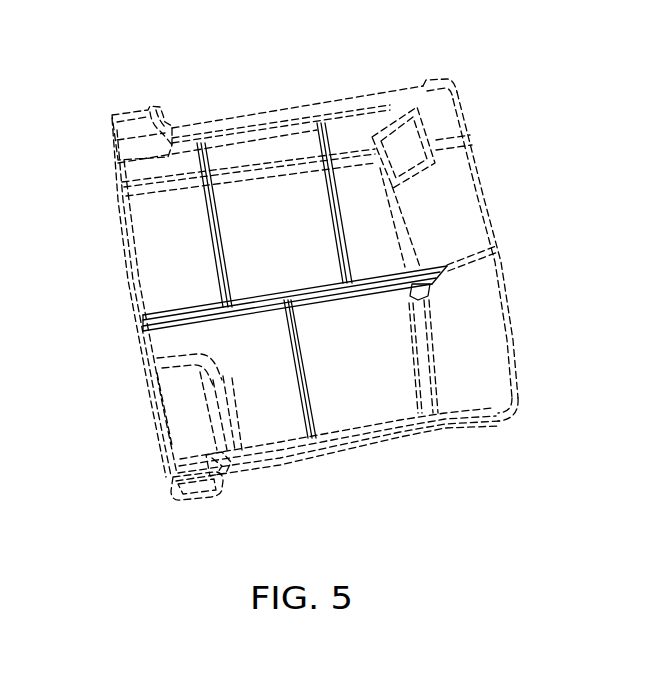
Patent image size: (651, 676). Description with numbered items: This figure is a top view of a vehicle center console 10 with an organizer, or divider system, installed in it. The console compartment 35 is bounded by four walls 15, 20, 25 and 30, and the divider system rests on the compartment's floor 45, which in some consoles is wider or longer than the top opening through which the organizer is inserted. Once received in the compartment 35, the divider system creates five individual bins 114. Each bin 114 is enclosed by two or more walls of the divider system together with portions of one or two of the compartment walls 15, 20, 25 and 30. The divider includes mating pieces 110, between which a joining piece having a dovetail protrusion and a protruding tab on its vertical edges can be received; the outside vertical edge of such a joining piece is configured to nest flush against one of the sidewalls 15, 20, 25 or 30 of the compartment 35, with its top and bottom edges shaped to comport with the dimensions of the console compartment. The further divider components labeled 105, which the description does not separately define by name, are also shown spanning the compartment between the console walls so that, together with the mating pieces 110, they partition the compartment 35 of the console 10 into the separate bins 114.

The console 10 is at (418, 88).
The wall of the compartment 15 is at (461, 188).
The wall of the compartment 20 is at (349, 432).
The wall of the compartment 25 is at (143, 348).
The wall of the compartment 30 is at (353, 130).
The console compartment 35 is at (238, 160).
The floor of the console compartment 45 is at (278, 232).
The divider partition 105 is at (334, 194).
The mating pieces 110 is at (183, 306).
The individual bins 114 is at (183, 262).